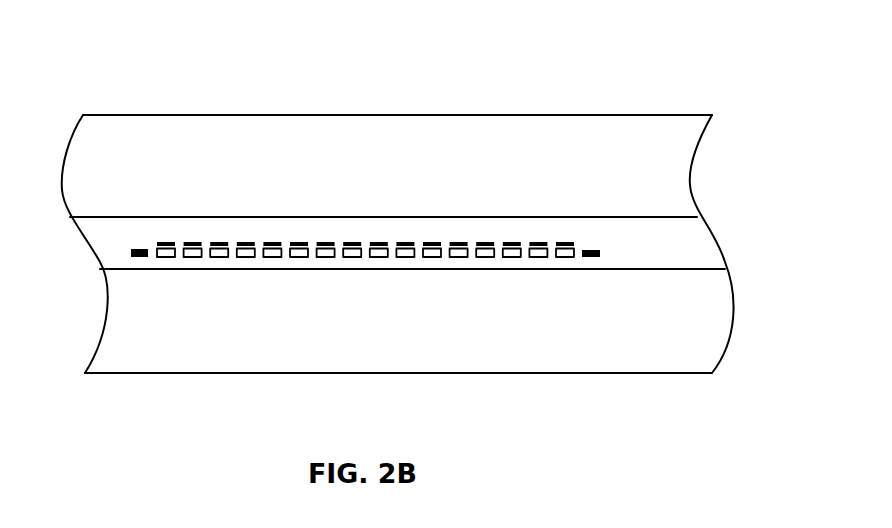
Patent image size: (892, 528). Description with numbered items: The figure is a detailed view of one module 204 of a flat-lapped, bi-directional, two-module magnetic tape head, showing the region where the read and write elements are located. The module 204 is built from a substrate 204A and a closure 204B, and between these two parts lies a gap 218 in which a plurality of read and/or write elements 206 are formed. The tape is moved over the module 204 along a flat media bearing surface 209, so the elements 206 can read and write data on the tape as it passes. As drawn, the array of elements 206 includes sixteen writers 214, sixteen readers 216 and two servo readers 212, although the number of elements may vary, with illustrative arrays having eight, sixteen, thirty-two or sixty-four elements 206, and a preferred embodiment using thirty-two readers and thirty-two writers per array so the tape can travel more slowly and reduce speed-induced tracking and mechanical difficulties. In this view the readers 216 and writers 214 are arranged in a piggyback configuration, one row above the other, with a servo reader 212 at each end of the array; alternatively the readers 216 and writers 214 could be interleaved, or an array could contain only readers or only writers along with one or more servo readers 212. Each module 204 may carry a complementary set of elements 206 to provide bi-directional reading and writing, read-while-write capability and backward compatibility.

The module 204 is at (100, 86).
The substrate 204A is at (193, 115).
The closure 204B is at (243, 373).
The media bearing surface 209 is at (322, 184).
The elements 206 is at (634, 237).
The writers 214 is at (483, 242).
The readers 216 is at (485, 258).
The servo readers 212 is at (131, 253).
The gap 218 is at (713, 243).